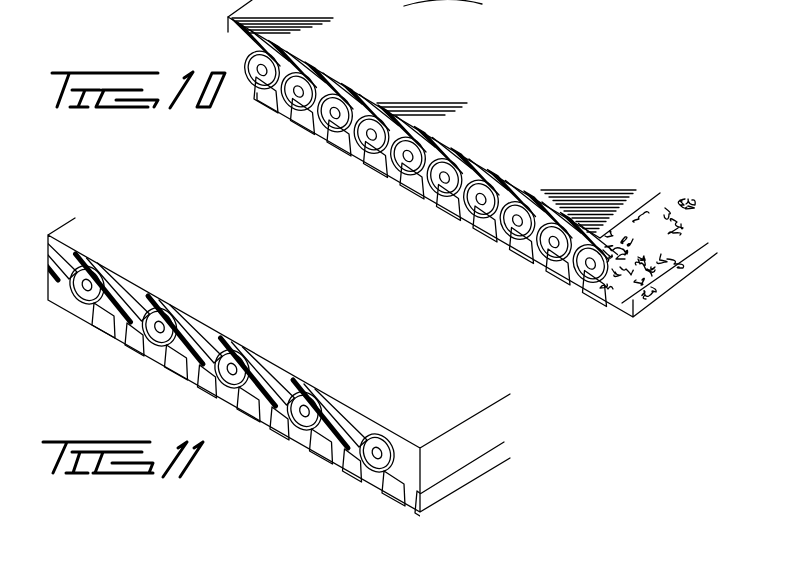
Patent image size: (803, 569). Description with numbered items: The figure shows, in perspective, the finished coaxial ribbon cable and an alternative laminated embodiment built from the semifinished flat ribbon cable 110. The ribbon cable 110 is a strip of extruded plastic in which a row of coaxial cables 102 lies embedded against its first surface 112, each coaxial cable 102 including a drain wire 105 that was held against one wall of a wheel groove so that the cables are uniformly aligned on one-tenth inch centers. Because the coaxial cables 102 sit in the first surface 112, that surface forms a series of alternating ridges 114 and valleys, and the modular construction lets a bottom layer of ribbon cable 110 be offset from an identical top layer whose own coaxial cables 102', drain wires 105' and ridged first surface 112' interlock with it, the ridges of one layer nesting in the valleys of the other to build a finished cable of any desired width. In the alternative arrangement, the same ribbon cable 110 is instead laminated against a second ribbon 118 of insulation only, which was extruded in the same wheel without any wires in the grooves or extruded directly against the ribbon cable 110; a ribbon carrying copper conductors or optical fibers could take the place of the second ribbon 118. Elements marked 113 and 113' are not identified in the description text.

In FIG. 11, the coaxial cable 102 is at (279, 365).
In FIG. 10, the coaxial cable of second semifinish 102' is at (472, 167).
In FIG. 10, the drain wire 105 is at (590, 224).
In FIG. 10, the drain wire of second semifinish 105' is at (594, 309).
In FIG. 11, the semifinished flat ribbon cable 110 is at (275, 423).
In FIG. 10, the first surface 112 is at (255, 25).
In FIG. 10, the first surface of second semifinish 112' is at (658, 273).
In FIG. 10, the blade slot 113 is at (370, 87).
In FIG. 10, the lower slot block 113' is at (321, 157).
In FIG. 11, the ridge 114 is at (155, 300).
In FIG. 11, the second ribbon 118 is at (275, 383).